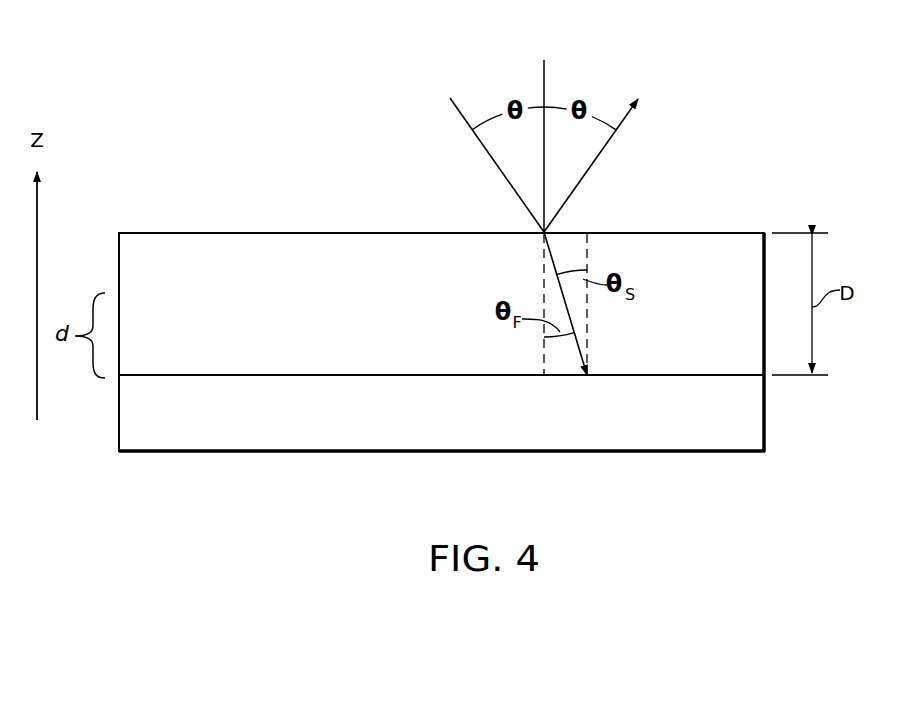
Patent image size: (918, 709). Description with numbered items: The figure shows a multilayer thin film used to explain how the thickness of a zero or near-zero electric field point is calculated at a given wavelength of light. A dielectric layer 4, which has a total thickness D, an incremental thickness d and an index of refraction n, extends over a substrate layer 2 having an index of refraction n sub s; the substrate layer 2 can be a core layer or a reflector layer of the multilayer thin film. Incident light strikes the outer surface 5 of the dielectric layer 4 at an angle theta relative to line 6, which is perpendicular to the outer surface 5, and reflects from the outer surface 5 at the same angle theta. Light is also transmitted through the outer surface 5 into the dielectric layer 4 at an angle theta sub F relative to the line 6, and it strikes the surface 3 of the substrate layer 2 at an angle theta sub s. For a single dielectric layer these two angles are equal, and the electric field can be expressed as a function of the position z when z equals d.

The substrate layer 2 is at (683, 442).
The surface of substrate layer 3 is at (382, 375).
The dielectric layer 4 is at (717, 244).
The outer surface 5 is at (267, 233).
The line 6 is at (545, 76).